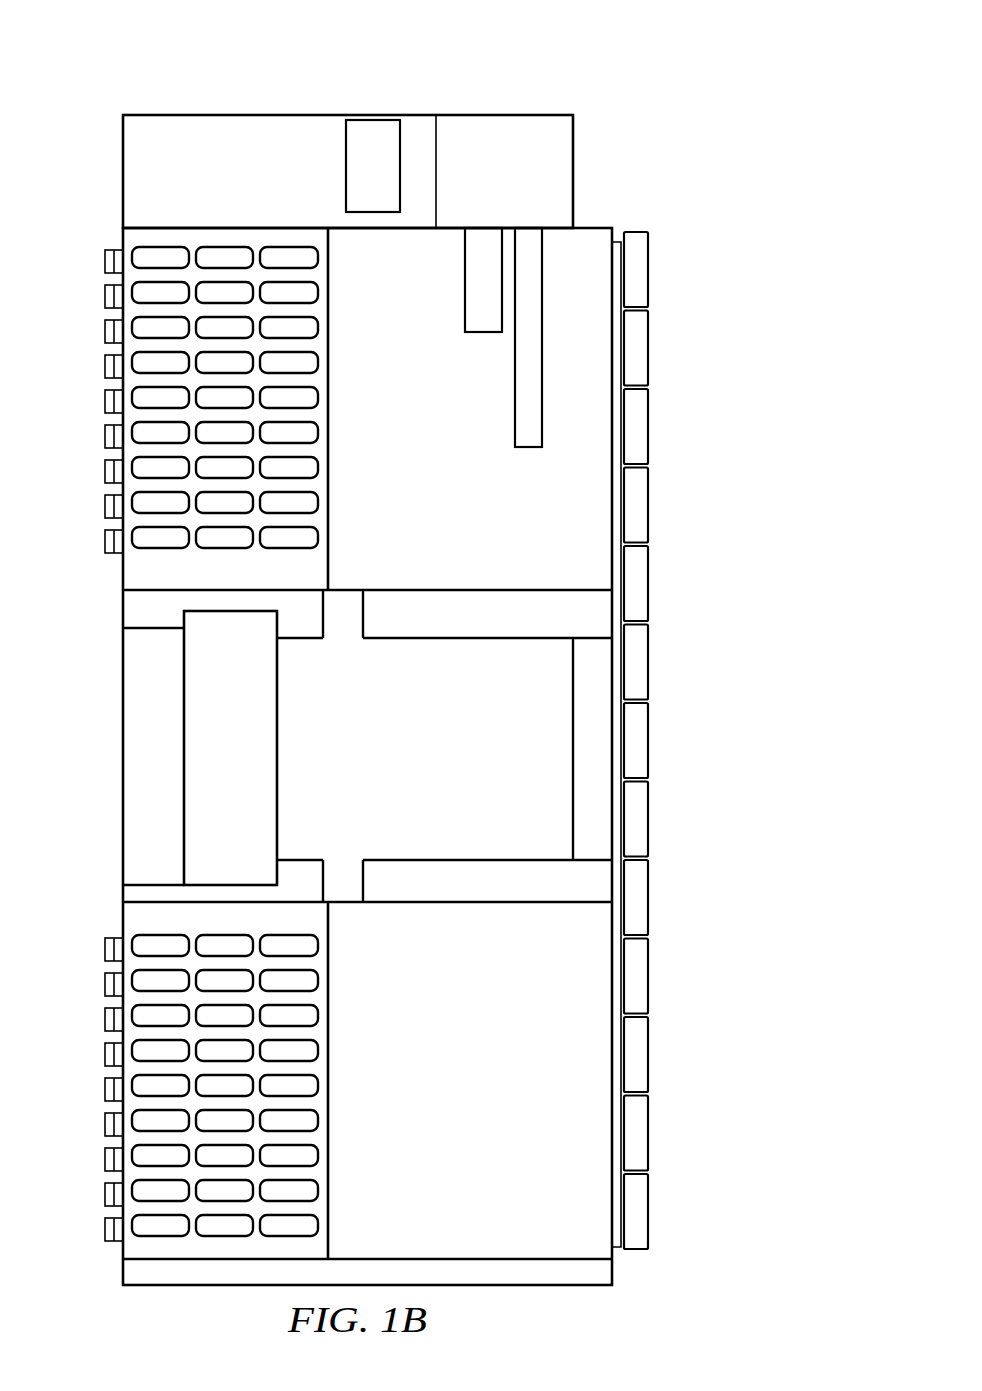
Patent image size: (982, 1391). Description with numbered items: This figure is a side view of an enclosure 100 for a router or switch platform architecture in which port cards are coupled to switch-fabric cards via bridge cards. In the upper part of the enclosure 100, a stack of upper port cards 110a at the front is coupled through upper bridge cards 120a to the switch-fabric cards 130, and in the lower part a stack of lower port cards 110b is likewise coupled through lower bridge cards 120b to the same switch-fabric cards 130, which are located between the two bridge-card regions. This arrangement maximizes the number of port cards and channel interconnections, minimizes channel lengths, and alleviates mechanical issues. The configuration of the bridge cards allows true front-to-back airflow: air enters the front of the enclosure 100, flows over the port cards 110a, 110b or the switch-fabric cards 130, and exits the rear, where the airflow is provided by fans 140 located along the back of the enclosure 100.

The enclosure 100 is at (212, 62).
The upper port cards 110a is at (93, 245).
The lower port cards 110b is at (93, 932).
The upper bridge cards 120a is at (486, 427).
The lower bridge cards 120b is at (501, 1088).
The switch-fabric cards 130 is at (424, 765).
The fans 140 is at (650, 1275).